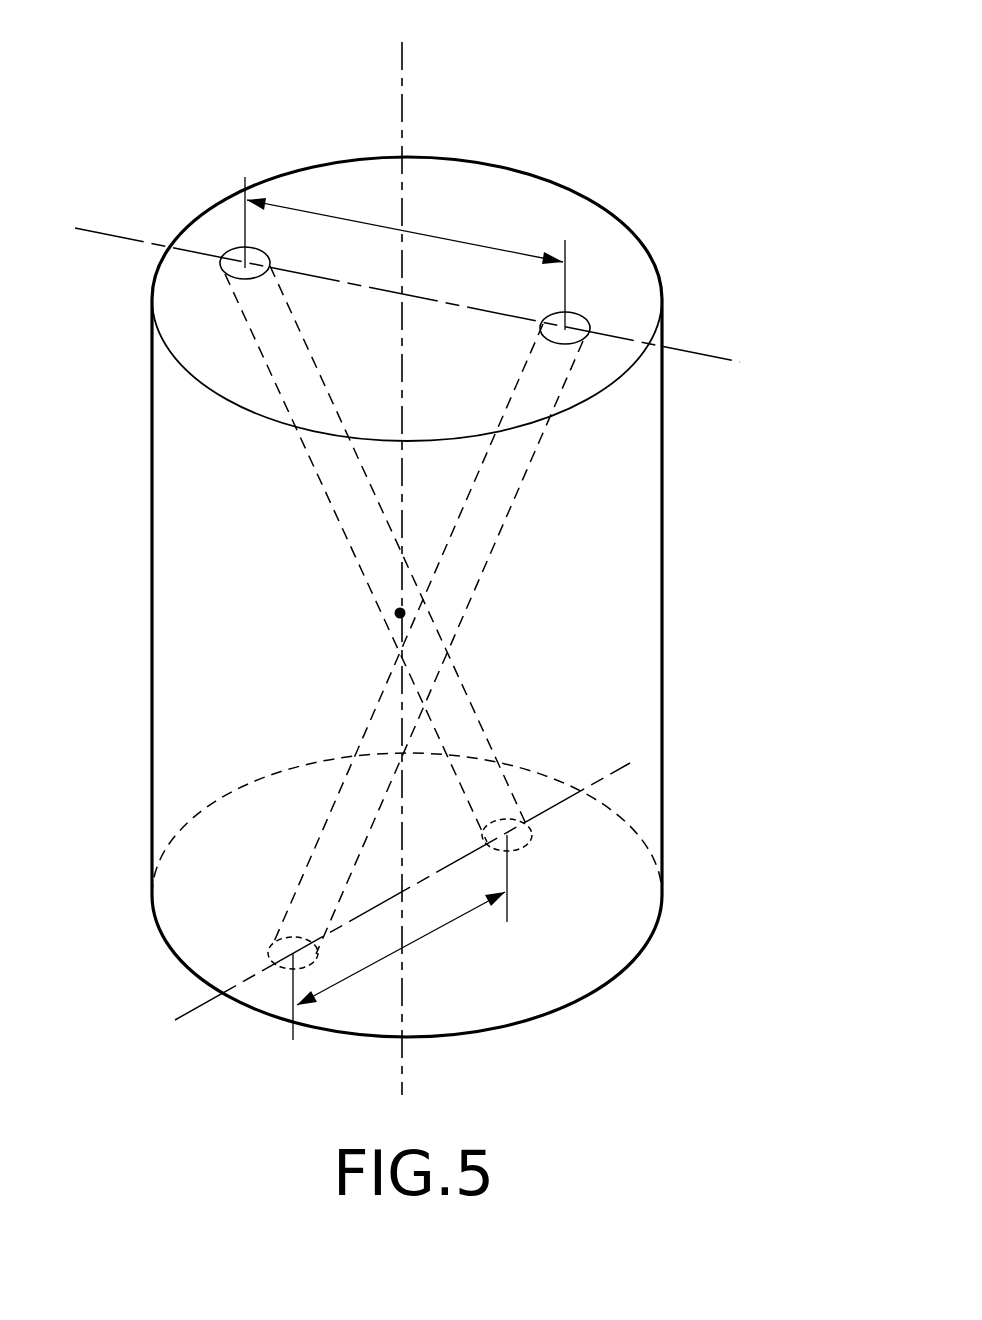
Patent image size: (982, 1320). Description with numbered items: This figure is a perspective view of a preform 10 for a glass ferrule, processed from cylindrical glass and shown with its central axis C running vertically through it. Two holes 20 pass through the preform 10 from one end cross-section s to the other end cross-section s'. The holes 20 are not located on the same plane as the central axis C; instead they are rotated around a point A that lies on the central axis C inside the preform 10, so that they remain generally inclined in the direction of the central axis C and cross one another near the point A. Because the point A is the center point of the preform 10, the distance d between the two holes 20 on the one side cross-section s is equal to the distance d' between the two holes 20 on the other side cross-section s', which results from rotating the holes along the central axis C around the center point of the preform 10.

The preform 10 is at (640, 465).
The holes 20 is at (478, 510).
The point A is at (406, 612).
The central axis C is at (401, 547).
The one side cross-section s is at (411, 267).
The other side cross-section s' is at (414, 919).
The distance between the two holes on one side cross-section d is at (405, 253).
The distance between the two holes on the other side cross-section d' is at (400, 937).